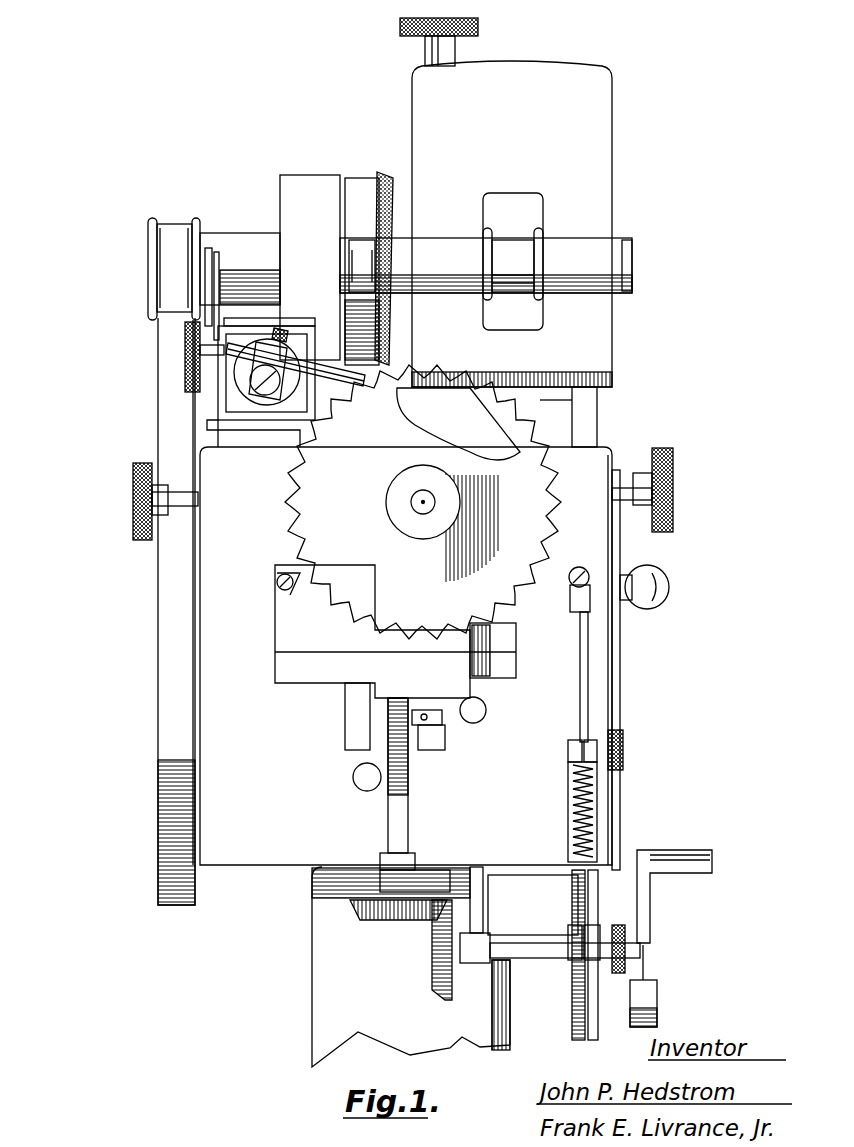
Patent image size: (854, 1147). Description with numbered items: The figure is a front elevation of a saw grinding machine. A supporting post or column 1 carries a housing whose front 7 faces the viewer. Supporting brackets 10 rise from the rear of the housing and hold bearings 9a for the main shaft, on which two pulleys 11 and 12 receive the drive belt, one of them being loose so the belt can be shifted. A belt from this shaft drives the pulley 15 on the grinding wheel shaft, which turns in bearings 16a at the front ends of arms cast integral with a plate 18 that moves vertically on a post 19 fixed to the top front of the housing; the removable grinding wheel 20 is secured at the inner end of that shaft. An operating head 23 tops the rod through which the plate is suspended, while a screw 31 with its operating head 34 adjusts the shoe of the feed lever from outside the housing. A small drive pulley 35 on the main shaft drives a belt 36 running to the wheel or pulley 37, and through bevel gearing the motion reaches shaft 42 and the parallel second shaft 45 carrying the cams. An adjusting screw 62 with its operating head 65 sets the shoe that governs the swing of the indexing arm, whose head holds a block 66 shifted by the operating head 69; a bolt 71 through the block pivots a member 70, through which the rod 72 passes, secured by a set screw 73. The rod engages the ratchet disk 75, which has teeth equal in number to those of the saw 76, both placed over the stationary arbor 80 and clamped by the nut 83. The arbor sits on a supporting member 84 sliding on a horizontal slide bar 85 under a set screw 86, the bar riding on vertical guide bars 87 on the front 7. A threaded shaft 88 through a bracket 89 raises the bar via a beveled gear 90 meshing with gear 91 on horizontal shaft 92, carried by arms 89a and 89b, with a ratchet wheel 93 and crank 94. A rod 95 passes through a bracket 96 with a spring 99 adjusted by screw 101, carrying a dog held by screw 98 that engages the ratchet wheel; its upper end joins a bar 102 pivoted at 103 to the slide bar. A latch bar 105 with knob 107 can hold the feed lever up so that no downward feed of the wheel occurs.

The supporting post or column 1 is at (320, 965).
The front 7 is at (280, 830).
The bearings 9a is at (238, 248).
The supporting brackets 10 is at (230, 317).
The pulley 11 is at (313, 185).
The pulley 12 is at (358, 190).
The pulley 15 is at (510, 237).
The bearings 16a is at (443, 250).
The plate 18 is at (595, 160).
The post 19 is at (568, 415).
The grinding wheel 20 is at (390, 205).
The operating head 23 is at (478, 30).
The screw 31 is at (620, 487).
The operating head 34 is at (660, 490).
The small drive pulley 35 is at (152, 262).
The belt 36 is at (168, 652).
The wheel or pulley 37 is at (160, 805).
The shaft 42 is at (362, 782).
The second shaft 45 is at (487, 710).
The adjusting screw 62 is at (188, 508).
The operating head 65 is at (133, 518).
The block 66 is at (233, 393).
The operating head 69 is at (187, 355).
The member 70 is at (255, 380).
The bolt 71 is at (270, 392).
The rod 72 is at (318, 386).
The set screw 73 is at (280, 333).
The disk 75 is at (487, 432).
The saw 76 is at (537, 512).
The stationary arbor 80 is at (417, 502).
The nut 83 is at (407, 517).
The supporting member 84 is at (453, 658).
The horizontal slide bar 85 is at (328, 640).
The set screw 86 is at (442, 723).
The vertical guide bars 87 is at (352, 712).
The shaft 88 is at (408, 810).
The bracket 89 is at (423, 873).
The downwardly extending arm 89a is at (478, 923).
The downwardly extending arm 89b is at (612, 915).
The beveled gear 90 is at (393, 920).
The gear 91 is at (432, 980).
The horizontal shaft 92 is at (543, 952).
The ratchet wheel 93 is at (575, 988).
The crank 94 is at (650, 890).
The rod 95 is at (583, 693).
The bracket 96 is at (597, 857).
The screw 98 is at (623, 953).
The spring 99 is at (590, 805).
The screw 101 is at (625, 745).
The bar 102 is at (555, 580).
The pivotal connection 103 is at (273, 590).
The latch bar 105 is at (618, 553).
The handle or knob 107 is at (670, 590).